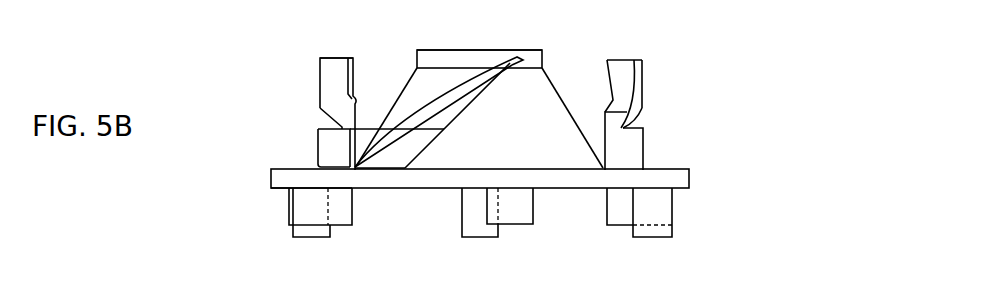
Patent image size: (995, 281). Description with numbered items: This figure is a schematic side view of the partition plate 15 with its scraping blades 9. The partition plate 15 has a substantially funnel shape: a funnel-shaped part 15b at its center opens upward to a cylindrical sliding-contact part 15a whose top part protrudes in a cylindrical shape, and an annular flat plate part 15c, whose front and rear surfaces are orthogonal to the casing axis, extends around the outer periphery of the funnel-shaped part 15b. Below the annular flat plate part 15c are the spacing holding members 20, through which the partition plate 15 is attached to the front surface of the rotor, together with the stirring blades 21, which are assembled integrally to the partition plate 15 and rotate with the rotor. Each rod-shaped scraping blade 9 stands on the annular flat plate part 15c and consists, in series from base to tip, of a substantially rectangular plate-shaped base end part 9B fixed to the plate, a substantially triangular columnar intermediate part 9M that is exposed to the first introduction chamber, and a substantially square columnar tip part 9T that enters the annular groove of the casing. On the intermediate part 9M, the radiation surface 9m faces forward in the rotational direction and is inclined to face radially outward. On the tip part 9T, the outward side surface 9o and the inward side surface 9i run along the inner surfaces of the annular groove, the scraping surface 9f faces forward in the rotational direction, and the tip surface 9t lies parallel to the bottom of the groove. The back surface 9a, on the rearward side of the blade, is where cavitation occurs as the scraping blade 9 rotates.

The scraping blade 9 is at (310, 73).
The tip surface 9t is at (338, 58).
The inward side surface 9i is at (353, 95).
The outward side surface 9o is at (318, 97).
The tip part 9T is at (312, 103).
The back surface 9a is at (460, 83).
The intermediate part 9M is at (312, 142).
The base end part 9B is at (312, 163).
The scraping surface 9f is at (467, 117).
The radiation surface 9m is at (392, 150).
The partition plate 15 is at (697, 181).
The cylindrical sliding-contact part 15a is at (532, 50).
The funnel-shaped part 15b is at (582, 150).
The annular flat plate part 15c is at (367, 178).
The spacing holding member 20 is at (302, 233).
The stirring blade 21 is at (300, 208).